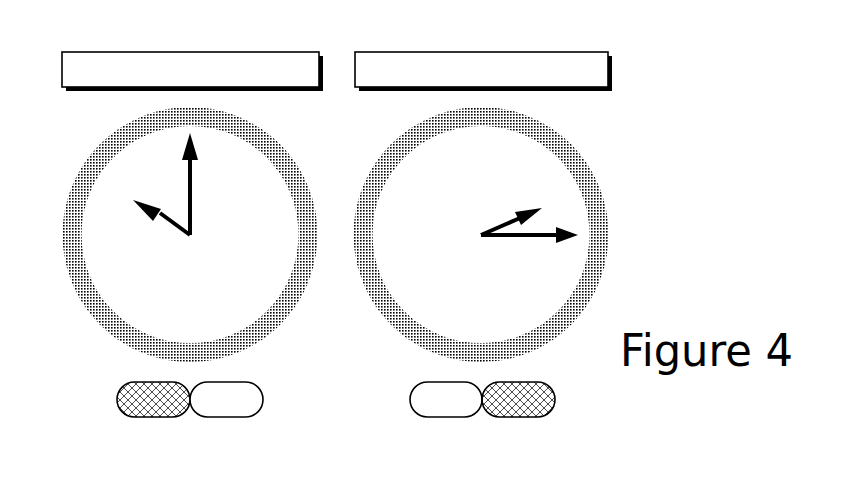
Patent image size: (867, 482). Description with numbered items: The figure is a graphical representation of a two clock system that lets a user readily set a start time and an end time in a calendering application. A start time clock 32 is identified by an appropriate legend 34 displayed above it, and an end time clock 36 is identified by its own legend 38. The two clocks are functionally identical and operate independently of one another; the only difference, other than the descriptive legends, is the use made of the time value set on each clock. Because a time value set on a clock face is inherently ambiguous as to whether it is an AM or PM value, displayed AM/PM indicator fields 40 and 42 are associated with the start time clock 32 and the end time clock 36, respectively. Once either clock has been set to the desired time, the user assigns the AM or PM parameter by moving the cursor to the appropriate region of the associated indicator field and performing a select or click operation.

The start time clock 32 is at (52, 138).
The legend 34 is at (190, 52).
The end time clock 36 is at (623, 136).
The legend 38 is at (482, 52).
The AM/PM indicator field 40 is at (179, 444).
The AM/PM indicator field 42 is at (468, 446).